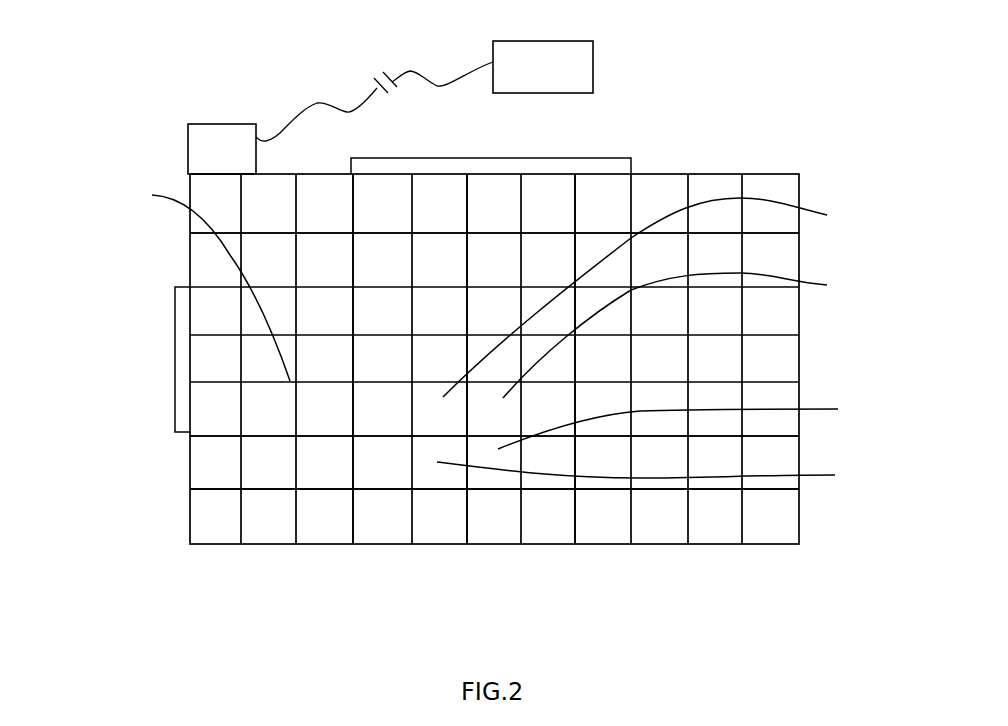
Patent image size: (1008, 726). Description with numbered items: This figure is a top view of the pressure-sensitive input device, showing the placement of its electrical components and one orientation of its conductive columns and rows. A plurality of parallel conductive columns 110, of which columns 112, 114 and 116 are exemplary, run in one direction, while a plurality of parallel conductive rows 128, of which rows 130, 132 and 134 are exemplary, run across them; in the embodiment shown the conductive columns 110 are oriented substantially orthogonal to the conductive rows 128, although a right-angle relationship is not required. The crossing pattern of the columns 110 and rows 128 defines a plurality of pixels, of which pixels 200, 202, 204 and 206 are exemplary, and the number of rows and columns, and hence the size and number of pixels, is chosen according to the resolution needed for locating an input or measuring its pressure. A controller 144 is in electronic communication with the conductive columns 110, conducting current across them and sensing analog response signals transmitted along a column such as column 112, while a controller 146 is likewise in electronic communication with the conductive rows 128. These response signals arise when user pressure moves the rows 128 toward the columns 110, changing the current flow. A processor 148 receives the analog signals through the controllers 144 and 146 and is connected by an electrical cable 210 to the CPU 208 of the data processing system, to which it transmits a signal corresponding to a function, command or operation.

The conductive columns 110 is at (740, 547).
The conductive column 112 is at (412, 503).
The conductive column 114 is at (521, 500).
The conductive column 116 is at (628, 498).
The conductive rows 128 is at (167, 232).
The conductive row 130 is at (278, 490).
The conductive row 132 is at (262, 437).
The conductive row 134 is at (201, 286).
The controller 144 is at (608, 170).
The controller 146 is at (177, 342).
The processor 148 is at (215, 138).
The pixel 200 is at (654, 297).
The pixel 202 is at (684, 334).
The pixel 204 is at (687, 424).
The pixel 206 is at (657, 469).
The CPU 208 is at (578, 82).
The electrical cable 210 is at (350, 112).